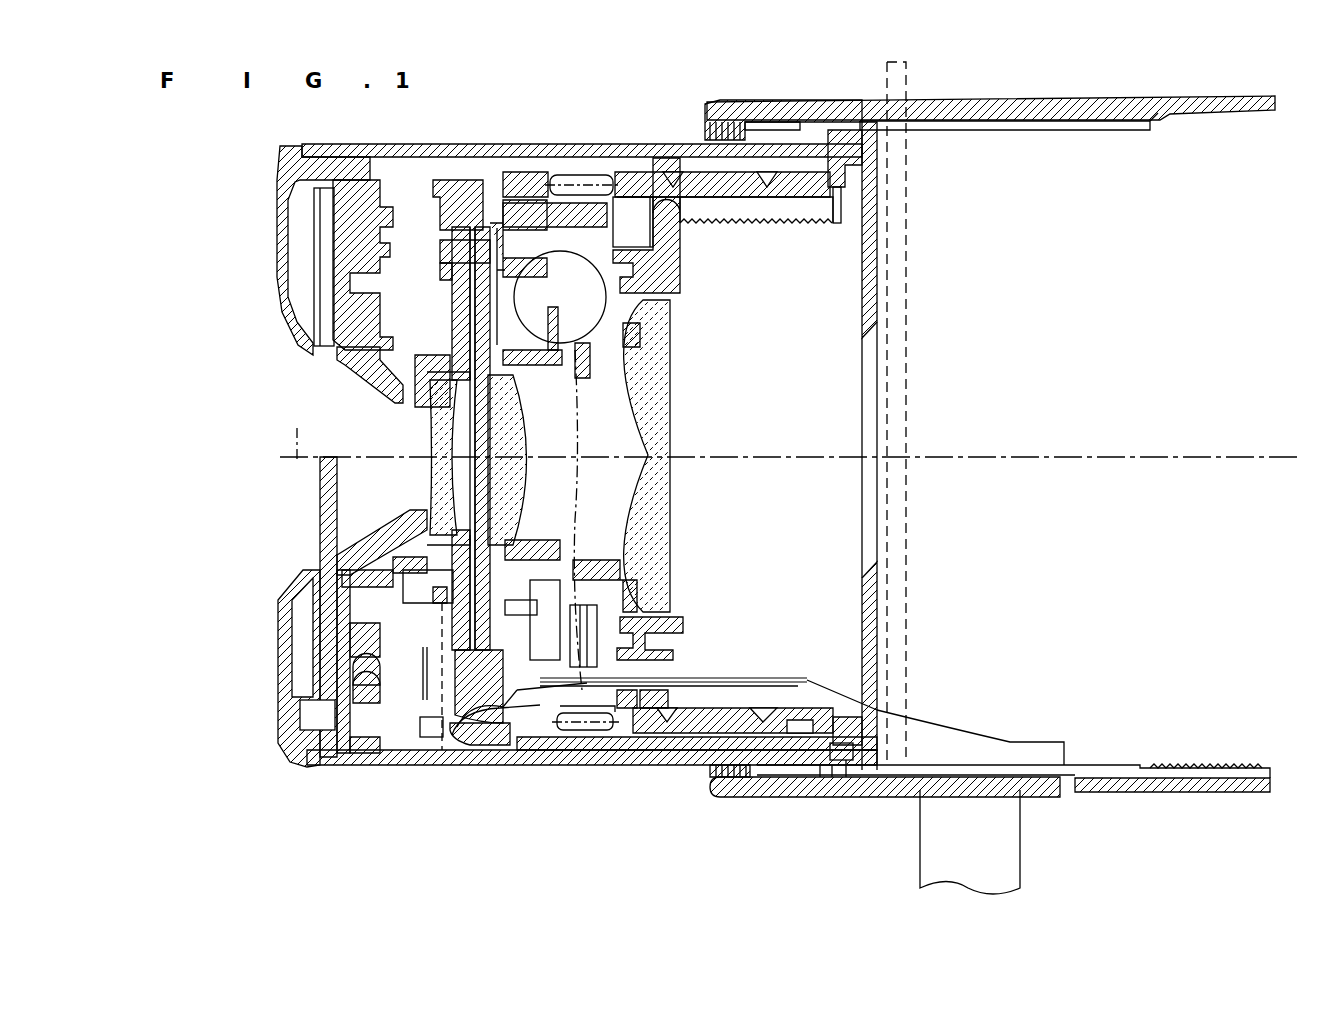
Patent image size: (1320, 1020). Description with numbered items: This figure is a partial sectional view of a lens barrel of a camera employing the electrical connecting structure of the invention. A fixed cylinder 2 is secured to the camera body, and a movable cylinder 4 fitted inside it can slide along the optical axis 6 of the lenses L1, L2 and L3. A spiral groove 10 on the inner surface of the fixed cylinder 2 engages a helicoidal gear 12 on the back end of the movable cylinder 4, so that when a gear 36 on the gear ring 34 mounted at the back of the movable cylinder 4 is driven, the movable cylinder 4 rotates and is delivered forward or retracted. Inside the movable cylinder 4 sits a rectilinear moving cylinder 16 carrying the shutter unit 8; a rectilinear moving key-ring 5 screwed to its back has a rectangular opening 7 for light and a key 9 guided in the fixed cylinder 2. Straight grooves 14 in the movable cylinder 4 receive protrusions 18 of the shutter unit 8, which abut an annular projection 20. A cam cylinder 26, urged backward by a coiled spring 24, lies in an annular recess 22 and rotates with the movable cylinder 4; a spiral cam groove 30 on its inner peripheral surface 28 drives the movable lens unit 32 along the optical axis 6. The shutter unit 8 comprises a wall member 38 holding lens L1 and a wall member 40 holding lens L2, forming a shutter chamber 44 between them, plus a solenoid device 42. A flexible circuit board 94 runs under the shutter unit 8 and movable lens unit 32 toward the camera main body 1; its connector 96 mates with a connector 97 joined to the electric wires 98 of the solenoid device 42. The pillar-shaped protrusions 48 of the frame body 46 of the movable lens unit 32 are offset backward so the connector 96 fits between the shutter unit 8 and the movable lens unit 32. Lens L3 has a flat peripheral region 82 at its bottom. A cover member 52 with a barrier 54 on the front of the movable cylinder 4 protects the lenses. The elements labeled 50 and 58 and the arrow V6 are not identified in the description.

The camera main body 1 is at (1215, 397).
The fixed cylinder 2 is at (1093, 98).
The movable cylinder 4 is at (640, 144).
The rectilinear moving key-ring 5 is at (878, 676).
The optical axis 6 is at (296, 438).
The rectangular opening 7 is at (881, 330).
The shutter unit 8 is at (425, 185).
The key 9 is at (866, 118).
The spiral groove 10 is at (1080, 131).
The helicoidal gear 12 is at (798, 102).
The straight grooves 14 is at (588, 172).
The rectilinear moving cylinder 16 is at (790, 690).
The protrusions 18 is at (488, 180).
The annular projection 20 is at (442, 750).
The annular recess 22 is at (556, 175).
The coiled spring 24 is at (582, 732).
The cam cylinder 26 is at (738, 705).
The inner peripheral surface 28 is at (733, 205).
The spiral cam groove 30 is at (763, 205).
The movable lens unit 32 is at (702, 315).
The gear ring 34 is at (828, 778).
The gear 36 is at (864, 778).
The wall member 38 is at (452, 305).
The wall member 40 is at (516, 628).
The solenoid device 42 is at (577, 287).
The shutter chamber 44 is at (472, 326).
The frame body 46 is at (688, 618).
The pillar-shaped protrusions 48 is at (683, 165).
The bearing portion 50 is at (828, 215).
The cover member 52 is at (395, 785).
The barrier 54 is at (318, 522).
The front lens frame 58 is at (440, 472).
The flat peripheral region 82 is at (636, 700).
The flexible circuit board 94 is at (757, 650).
The connector 96 is at (540, 725).
The connector 97 is at (672, 585).
The electric wires 98 is at (592, 462).
The lens L1 is at (430, 440).
The lens L2 is at (520, 446).
The lens L3 is at (672, 432).
The viewing direction V6 is at (1048, 410).